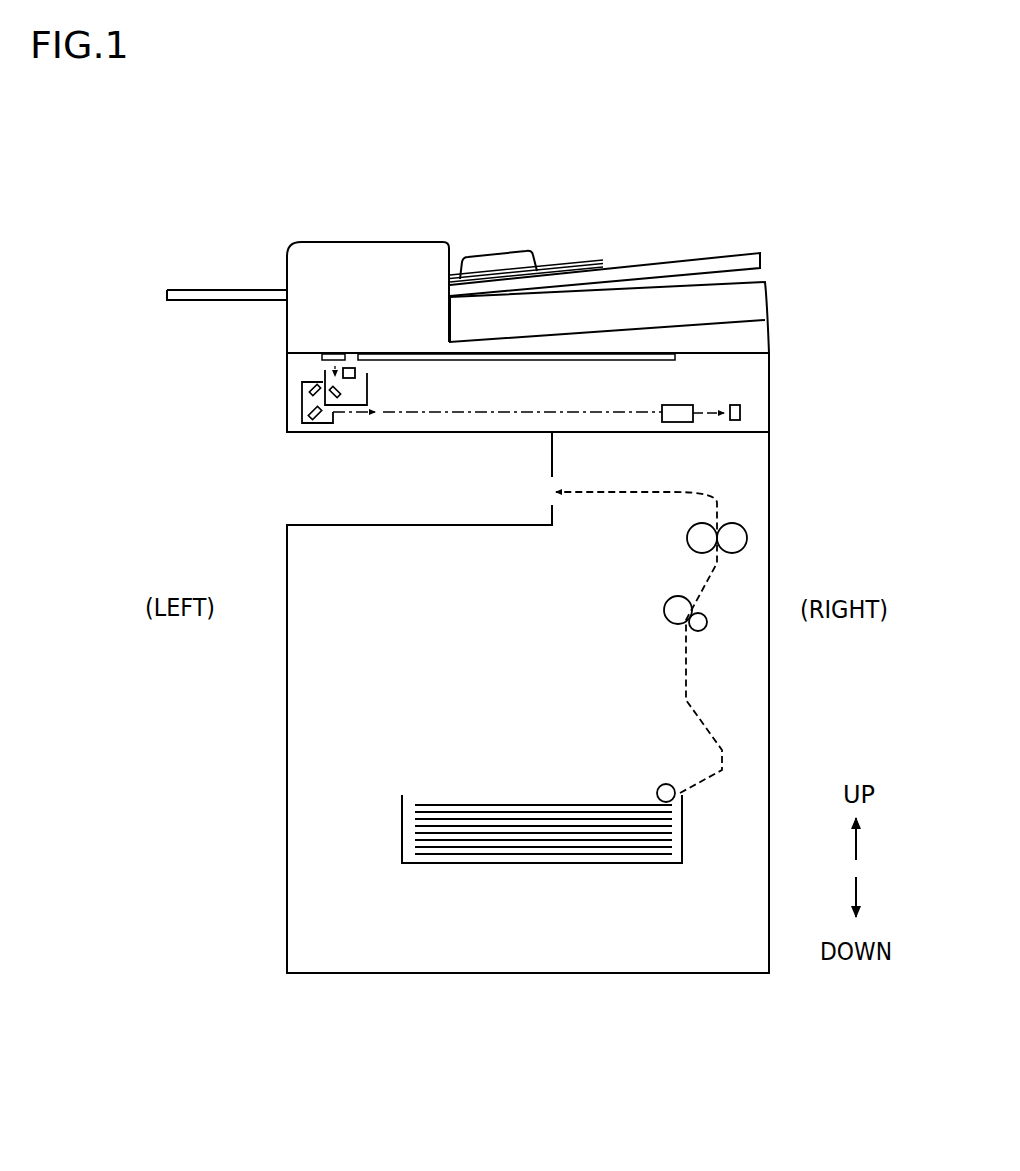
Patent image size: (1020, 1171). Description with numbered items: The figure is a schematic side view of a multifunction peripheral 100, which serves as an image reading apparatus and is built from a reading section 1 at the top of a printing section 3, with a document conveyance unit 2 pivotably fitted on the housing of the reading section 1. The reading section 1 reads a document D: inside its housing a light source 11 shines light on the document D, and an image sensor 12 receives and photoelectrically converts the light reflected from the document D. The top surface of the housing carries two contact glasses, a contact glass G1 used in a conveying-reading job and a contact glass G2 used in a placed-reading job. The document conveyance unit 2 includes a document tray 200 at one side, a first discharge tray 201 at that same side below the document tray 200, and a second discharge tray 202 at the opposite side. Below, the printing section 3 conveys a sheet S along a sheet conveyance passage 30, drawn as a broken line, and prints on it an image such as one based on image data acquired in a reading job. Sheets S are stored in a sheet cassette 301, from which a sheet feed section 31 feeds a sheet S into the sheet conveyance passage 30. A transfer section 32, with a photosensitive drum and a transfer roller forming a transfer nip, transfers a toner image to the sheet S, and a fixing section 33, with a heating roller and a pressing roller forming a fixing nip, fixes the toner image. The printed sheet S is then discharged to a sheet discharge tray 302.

The multifunction peripheral 100 is at (276, 229).
The reading section 1 is at (746, 383).
The document conveyance unit 2 is at (400, 268).
The printing section 3 is at (746, 488).
The light source 11 is at (355, 374).
The image sensor 12 is at (733, 403).
The sheet conveyance passage 30 is at (682, 685).
The sheet feed section 31 is at (660, 785).
The transfer section 32 is at (672, 603).
The fixing section 33 is at (693, 530).
The document tray 200 is at (722, 252).
The first discharge tray 201 is at (612, 328).
The second discharge tray 202 is at (217, 288).
The sheet cassette 301 is at (400, 817).
The sheet discharge tray 302 is at (480, 522).
The document D is at (595, 258).
The sheet S is at (498, 803).
The contact glass G1 is at (322, 357).
The contact glass G2 is at (603, 358).